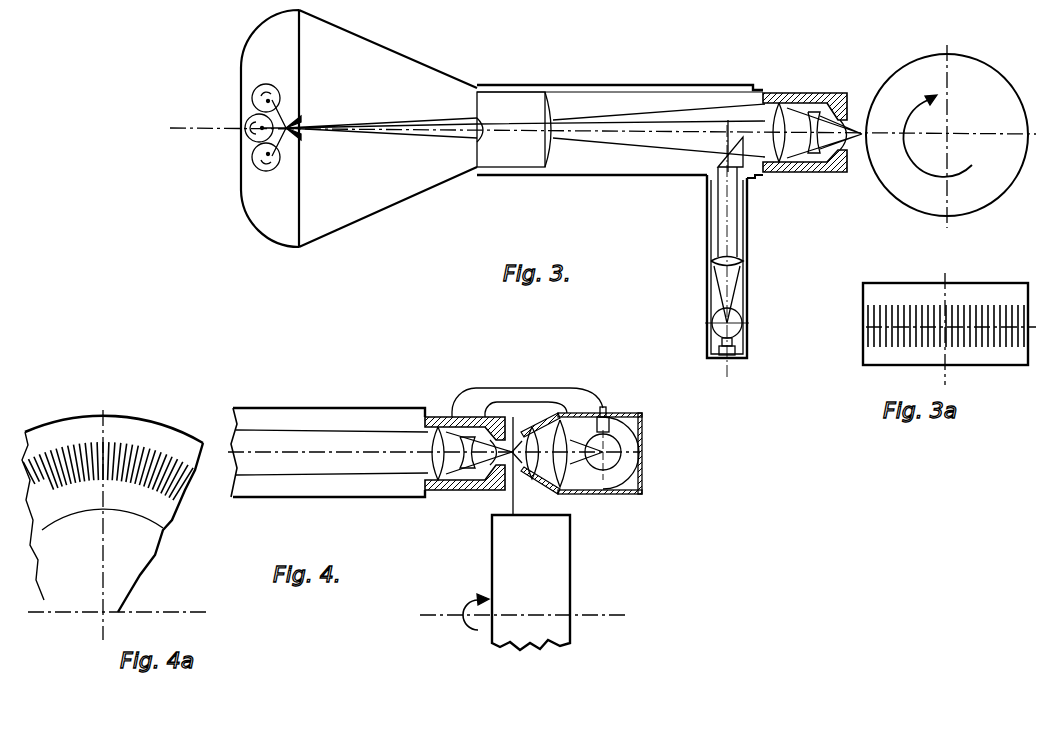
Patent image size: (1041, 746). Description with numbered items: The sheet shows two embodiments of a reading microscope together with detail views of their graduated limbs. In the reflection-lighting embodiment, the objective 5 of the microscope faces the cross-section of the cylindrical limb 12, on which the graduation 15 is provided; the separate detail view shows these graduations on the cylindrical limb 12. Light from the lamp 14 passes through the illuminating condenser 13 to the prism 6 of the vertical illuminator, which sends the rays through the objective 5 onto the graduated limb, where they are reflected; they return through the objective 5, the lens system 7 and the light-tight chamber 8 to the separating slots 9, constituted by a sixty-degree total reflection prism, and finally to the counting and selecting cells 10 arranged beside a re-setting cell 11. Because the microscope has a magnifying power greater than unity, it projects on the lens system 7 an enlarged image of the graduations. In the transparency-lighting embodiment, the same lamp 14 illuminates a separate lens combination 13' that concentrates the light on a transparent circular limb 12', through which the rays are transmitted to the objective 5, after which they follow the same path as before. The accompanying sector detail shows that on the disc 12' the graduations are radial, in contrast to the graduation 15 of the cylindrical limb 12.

In FIG. 3, the objective 5 is at (823, 172).
In FIG. 4, the objective 5 is at (455, 495).
In FIG. 3, the prism of the vertical illuminator 6 is at (718, 160).
In FIG. 3, the lens system 7 is at (503, 157).
In FIG. 3, the light-tight chamber 8 is at (388, 160).
In FIG. 3, the separating slots 9 is at (288, 136).
In FIG. 3, the counting and selecting cells 10 is at (254, 92).
In FIG. 3, the re-setting cell 11 is at (245, 129).
In FIG. 3, the cylindrical limb 12 is at (947, 136).
In FIG. 3, the illuminating condenser 13 is at (745, 278).
In FIG. 3, the lamp 14 is at (745, 318).
In FIG. 4, the lamp 14 is at (617, 462).
In FIG. 3A, the graduation of the cylindrical limb 15 is at (887, 293).
In FIG. 4, the transparent circular limb 12' is at (522, 572).
In FIG. 4A, the transparent circular limb 12' is at (118, 525).
In FIG. 4, the lens combination 13' is at (581, 466).